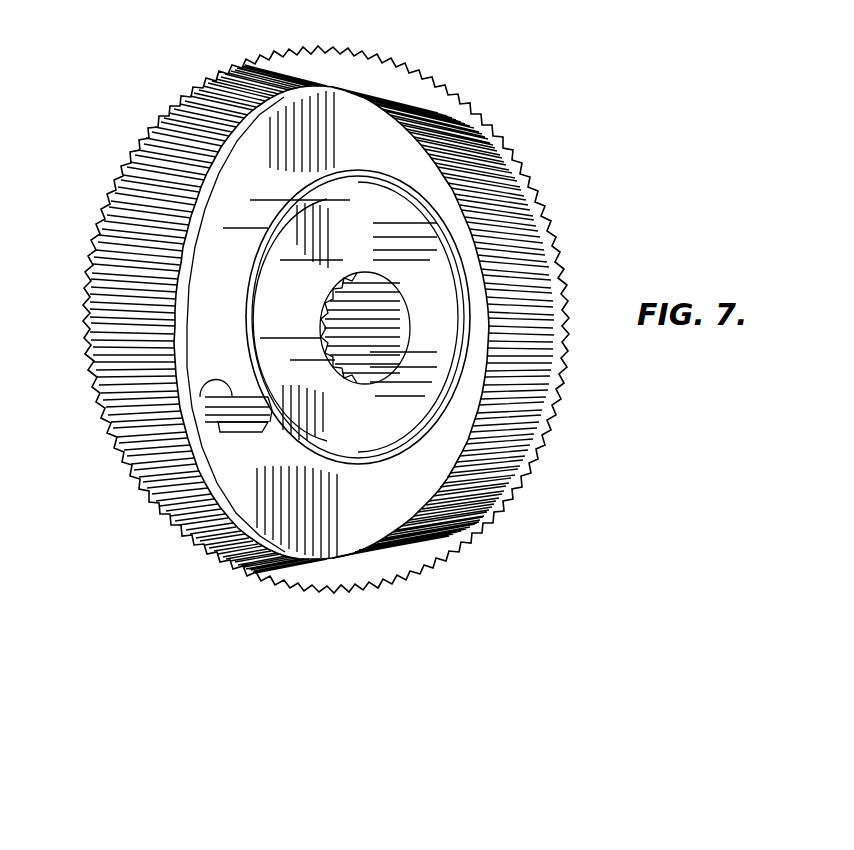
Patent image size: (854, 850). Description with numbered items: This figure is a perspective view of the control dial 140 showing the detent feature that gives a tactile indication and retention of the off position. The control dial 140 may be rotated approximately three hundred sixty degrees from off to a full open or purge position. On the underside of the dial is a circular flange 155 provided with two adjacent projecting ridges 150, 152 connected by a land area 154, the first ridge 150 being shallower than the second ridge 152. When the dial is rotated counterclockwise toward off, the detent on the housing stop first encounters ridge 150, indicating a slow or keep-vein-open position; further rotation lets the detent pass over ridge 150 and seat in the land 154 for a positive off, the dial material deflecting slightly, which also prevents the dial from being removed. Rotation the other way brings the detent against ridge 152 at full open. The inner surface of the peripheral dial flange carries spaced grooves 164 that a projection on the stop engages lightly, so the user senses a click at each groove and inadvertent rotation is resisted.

The control dial 140 is at (233, 66).
The spaced grooves 164 is at (550, 250).
The circular flange 155 is at (327, 172).
The first ridge 150 is at (212, 383).
The land area 154 is at (253, 412).
The second ridge 152 is at (240, 433).